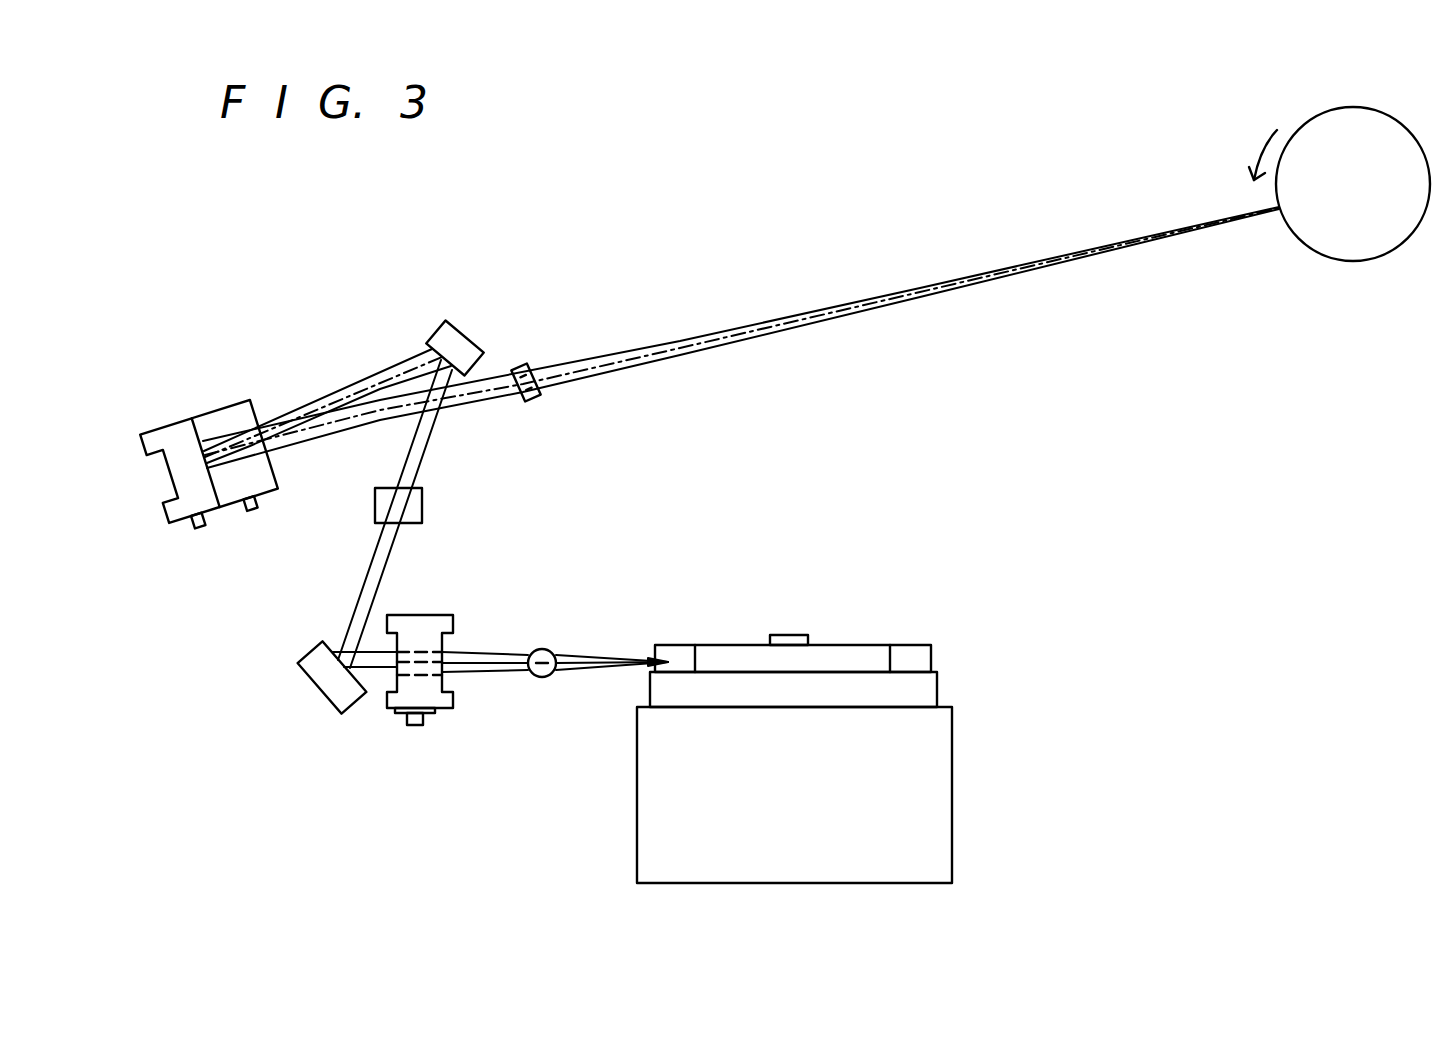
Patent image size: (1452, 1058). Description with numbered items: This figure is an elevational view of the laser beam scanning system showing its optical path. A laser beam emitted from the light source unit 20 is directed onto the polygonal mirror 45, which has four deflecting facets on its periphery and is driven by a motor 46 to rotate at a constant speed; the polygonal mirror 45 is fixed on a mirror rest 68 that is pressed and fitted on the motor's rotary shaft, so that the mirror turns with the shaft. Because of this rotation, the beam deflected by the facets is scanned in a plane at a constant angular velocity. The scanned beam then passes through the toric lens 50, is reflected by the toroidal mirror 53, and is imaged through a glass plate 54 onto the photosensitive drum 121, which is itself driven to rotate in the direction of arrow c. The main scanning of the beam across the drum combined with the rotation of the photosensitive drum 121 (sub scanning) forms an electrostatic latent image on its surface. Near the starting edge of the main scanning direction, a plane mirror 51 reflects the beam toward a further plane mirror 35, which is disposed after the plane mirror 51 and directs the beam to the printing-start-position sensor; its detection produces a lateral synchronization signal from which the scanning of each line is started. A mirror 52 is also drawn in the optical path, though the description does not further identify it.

The light source unit 20 is at (538, 648).
The plane mirror 35 is at (423, 503).
The polygonal mirror 45 is at (872, 655).
The motor 46 is at (942, 723).
The toric lens 50 is at (445, 703).
The plane mirror 51 is at (322, 645).
The mirror 52 is at (458, 323).
The toroidal mirror 53 is at (199, 442).
The glass plate 54 is at (525, 364).
The mirror rest 68 is at (942, 687).
The photosensitive drum 121 is at (1313, 250).